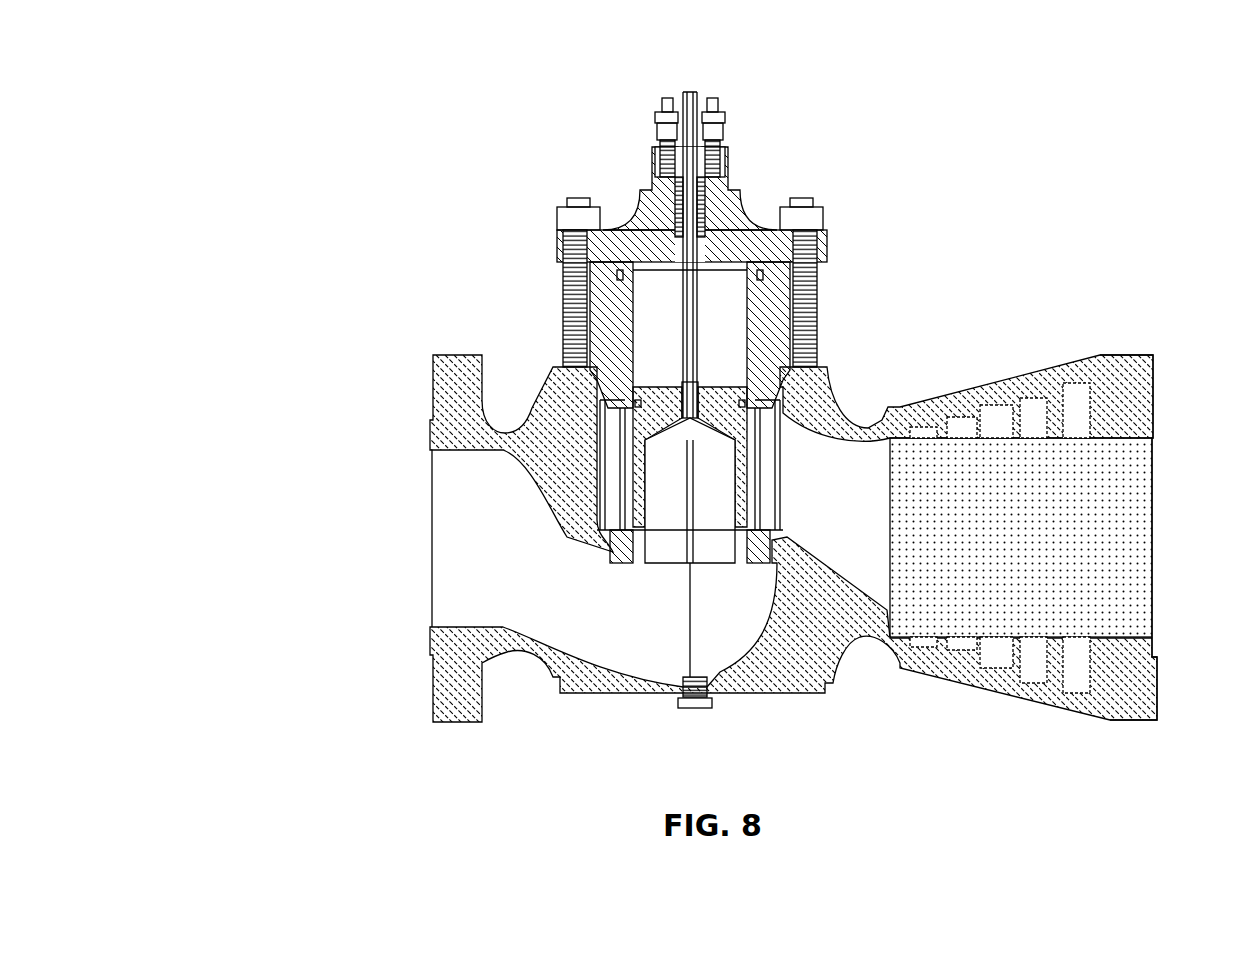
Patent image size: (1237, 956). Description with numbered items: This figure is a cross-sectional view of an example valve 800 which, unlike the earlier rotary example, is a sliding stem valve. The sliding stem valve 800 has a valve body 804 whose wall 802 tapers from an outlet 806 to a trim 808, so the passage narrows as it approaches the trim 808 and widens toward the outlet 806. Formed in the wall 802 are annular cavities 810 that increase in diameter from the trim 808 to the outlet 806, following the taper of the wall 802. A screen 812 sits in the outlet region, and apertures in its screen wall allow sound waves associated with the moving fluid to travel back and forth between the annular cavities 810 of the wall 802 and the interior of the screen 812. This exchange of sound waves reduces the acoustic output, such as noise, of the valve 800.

The valve 800 is at (268, 66).
The wall 802 is at (990, 690).
The valve body 804 is at (430, 442).
The outlet 806 is at (1180, 513).
The trim 808 is at (783, 507).
The annular cavities 810 is at (1033, 398).
The screen 812 is at (1127, 438).